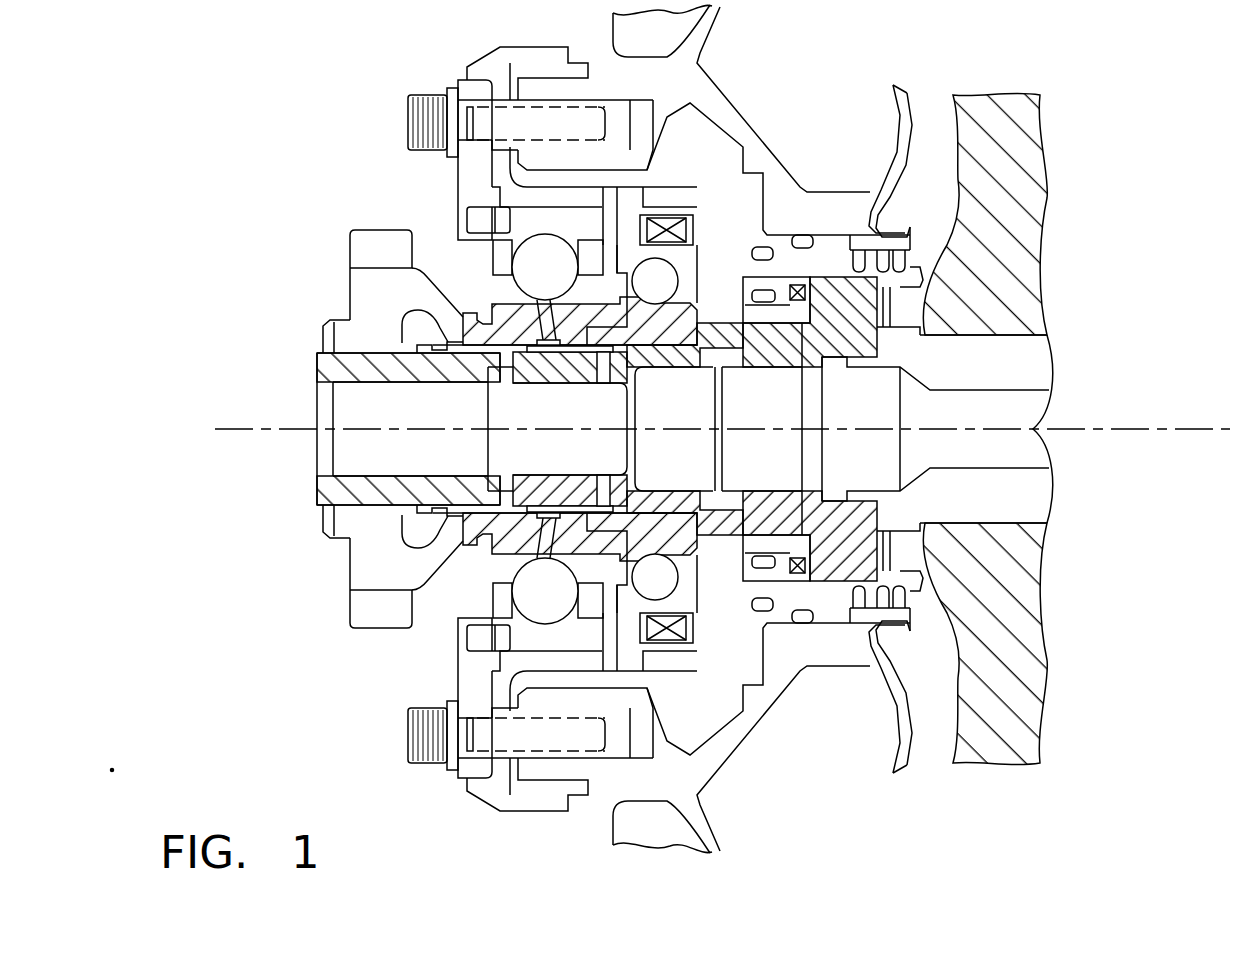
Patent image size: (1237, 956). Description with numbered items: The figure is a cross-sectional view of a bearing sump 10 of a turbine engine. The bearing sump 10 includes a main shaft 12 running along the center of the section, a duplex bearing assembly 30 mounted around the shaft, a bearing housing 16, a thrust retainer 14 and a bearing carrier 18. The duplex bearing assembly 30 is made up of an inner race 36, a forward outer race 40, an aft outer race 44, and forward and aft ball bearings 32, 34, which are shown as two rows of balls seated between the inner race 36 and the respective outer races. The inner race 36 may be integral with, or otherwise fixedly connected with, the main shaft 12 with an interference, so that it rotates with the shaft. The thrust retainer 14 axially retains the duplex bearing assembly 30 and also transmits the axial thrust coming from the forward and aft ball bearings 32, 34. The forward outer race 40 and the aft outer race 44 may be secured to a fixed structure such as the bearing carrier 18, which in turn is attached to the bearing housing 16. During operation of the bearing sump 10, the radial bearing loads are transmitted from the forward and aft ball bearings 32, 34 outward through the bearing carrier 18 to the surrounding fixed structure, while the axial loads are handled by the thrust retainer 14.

The bearing sump 10 is at (671, 429).
The main shaft 12 is at (557, 367).
The thrust retainer 14 is at (537, 217).
The bearing housing 16 is at (685, 88).
The bearing carrier 18 is at (710, 233).
The duplex bearing assembly 30 is at (462, 275).
The forward ball bearings 32 is at (559, 281).
The aft ball bearings 34 is at (669, 295).
The inner race 36 is at (490, 353).
The forward outer race 40 is at (466, 177).
The aft outer race 44 is at (662, 243).